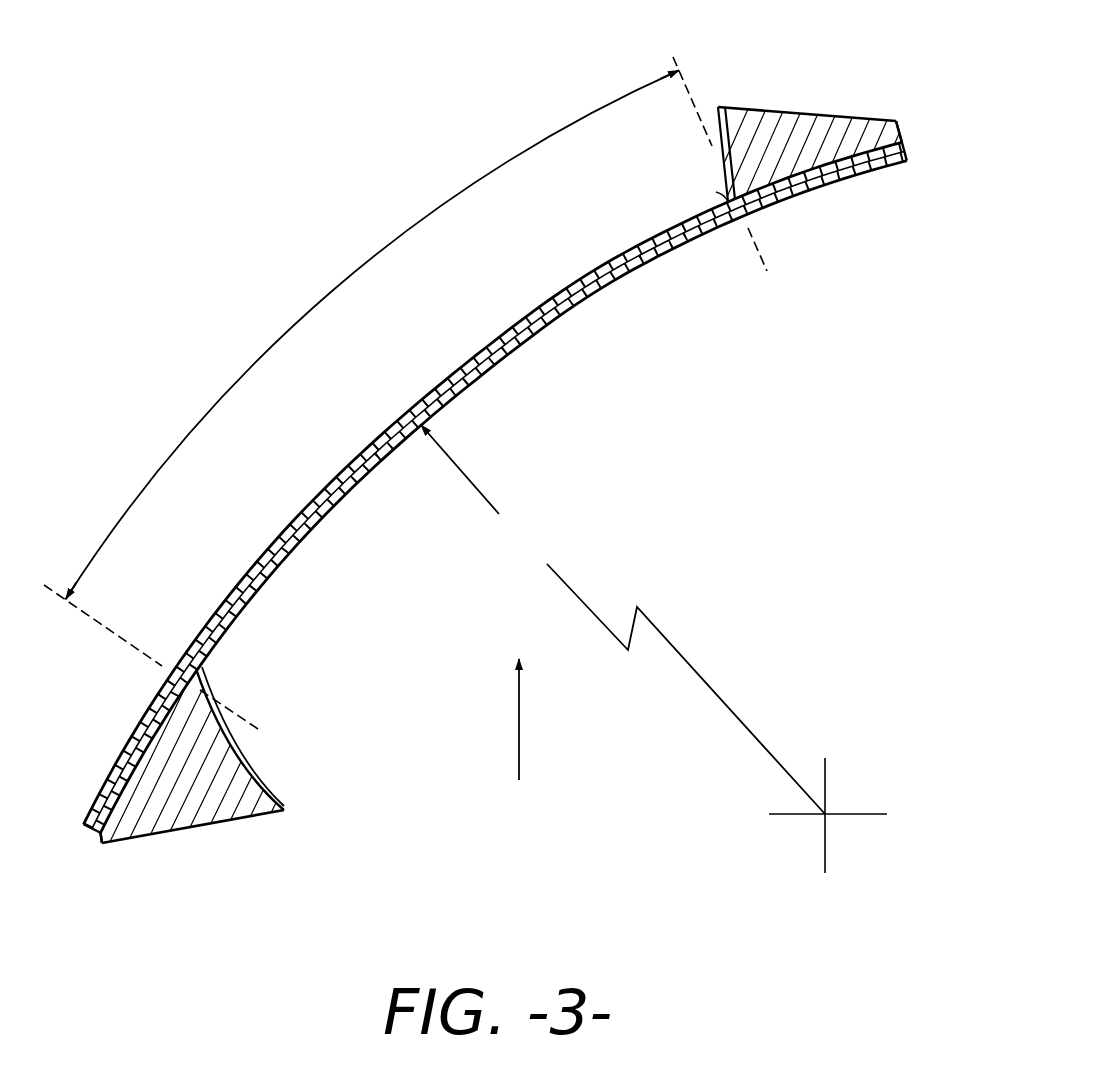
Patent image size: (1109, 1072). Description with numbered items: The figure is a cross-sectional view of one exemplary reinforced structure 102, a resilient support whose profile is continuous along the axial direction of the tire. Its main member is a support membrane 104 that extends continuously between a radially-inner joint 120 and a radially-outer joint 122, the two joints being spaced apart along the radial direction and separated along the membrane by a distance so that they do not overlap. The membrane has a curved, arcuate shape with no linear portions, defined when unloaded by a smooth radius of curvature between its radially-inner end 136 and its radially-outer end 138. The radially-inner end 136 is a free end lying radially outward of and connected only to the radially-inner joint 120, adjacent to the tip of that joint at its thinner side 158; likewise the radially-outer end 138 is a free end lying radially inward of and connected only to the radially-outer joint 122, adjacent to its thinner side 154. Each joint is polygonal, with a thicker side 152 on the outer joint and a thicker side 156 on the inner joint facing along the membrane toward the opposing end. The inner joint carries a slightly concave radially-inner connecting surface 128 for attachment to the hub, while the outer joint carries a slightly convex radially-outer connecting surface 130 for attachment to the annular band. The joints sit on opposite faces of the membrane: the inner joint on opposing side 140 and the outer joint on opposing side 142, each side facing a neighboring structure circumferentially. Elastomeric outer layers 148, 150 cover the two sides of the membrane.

The reinforced structure 102 is at (298, 127).
The support membrane 104 is at (504, 502).
The radially-inner joint 120 is at (221, 777).
The radially-outer joint 122 is at (768, 126).
The radially-inner connecting surface 128 is at (238, 824).
The radially-outer connecting surface 130 is at (776, 104).
The radially-inner end 136 is at (88, 833).
The radially-outer end 138 is at (912, 146).
The opposing side 140 is at (651, 409).
The opposing side 142 is at (186, 331).
The outer layer 148 is at (586, 310).
The outer layer 150 is at (537, 306).
The thicker side 152 is at (746, 154).
The thinner side 154 is at (892, 97).
The thicker side 156 is at (219, 757).
The thinner side 158 is at (103, 848).